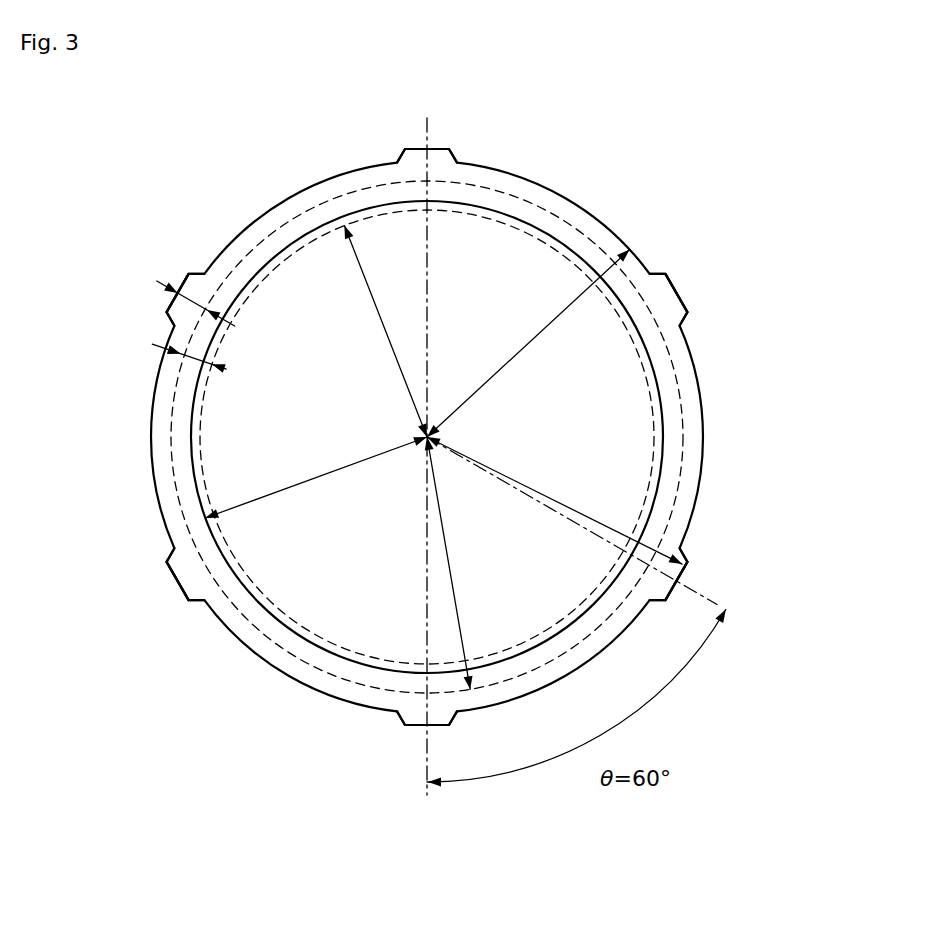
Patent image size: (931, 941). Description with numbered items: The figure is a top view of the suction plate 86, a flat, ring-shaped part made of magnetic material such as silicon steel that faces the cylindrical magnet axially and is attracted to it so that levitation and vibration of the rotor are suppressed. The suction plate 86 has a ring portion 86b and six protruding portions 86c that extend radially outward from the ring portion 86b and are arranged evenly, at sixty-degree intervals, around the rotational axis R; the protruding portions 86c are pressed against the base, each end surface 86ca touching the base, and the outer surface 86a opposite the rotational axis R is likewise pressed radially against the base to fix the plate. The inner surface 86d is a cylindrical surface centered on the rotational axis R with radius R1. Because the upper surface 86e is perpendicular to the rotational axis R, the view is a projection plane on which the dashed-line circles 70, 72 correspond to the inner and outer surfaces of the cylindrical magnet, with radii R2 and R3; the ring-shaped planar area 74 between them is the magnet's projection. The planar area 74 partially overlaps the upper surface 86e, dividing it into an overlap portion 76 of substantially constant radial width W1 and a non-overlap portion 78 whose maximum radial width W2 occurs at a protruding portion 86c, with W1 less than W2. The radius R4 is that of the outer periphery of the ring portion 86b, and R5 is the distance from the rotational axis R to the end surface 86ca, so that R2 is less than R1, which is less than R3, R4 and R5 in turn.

The dashed-line circle 70 is at (545, 245).
The dashed-line circle 72 is at (540, 207).
The ring-shaped planar area 74 is at (677, 407).
The overlap portion 76 is at (180, 423).
The non-overlap portion 78 is at (163, 398).
The suction plate 86 is at (413, 894).
The outer surface 86a is at (703, 497).
The ring portion 86b is at (313, 678).
The protruding portion 86c is at (455, 161).
The end surface 86ca is at (430, 149).
The inner surface 86d is at (663, 438).
The upper surface 86e is at (267, 652).
The rotational axis R is at (425, 445).
The radius of the inner surface of the suction plate R1 is at (316, 477).
The radius of the inner surface of the cylindrical magnet R2 is at (381, 320).
The radius of the circle corresponding to the outer surface of the cylindrical magne R3 is at (453, 590).
The radius of the outer periphery of the ring portion R4 is at (527, 346).
The distance between the end surface of the protruding portion and the rotational ax R5 is at (614, 530).
The width of the overlap portion W1 is at (171, 351).
The width of the non-overlap portion W2 is at (190, 300).